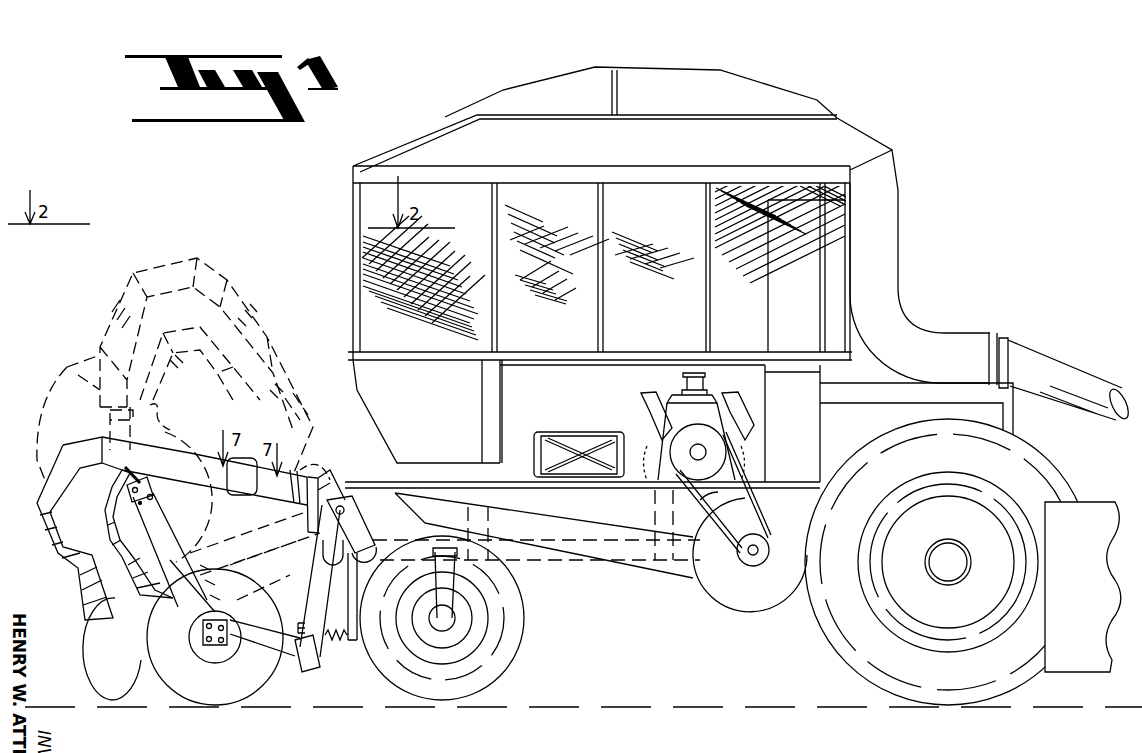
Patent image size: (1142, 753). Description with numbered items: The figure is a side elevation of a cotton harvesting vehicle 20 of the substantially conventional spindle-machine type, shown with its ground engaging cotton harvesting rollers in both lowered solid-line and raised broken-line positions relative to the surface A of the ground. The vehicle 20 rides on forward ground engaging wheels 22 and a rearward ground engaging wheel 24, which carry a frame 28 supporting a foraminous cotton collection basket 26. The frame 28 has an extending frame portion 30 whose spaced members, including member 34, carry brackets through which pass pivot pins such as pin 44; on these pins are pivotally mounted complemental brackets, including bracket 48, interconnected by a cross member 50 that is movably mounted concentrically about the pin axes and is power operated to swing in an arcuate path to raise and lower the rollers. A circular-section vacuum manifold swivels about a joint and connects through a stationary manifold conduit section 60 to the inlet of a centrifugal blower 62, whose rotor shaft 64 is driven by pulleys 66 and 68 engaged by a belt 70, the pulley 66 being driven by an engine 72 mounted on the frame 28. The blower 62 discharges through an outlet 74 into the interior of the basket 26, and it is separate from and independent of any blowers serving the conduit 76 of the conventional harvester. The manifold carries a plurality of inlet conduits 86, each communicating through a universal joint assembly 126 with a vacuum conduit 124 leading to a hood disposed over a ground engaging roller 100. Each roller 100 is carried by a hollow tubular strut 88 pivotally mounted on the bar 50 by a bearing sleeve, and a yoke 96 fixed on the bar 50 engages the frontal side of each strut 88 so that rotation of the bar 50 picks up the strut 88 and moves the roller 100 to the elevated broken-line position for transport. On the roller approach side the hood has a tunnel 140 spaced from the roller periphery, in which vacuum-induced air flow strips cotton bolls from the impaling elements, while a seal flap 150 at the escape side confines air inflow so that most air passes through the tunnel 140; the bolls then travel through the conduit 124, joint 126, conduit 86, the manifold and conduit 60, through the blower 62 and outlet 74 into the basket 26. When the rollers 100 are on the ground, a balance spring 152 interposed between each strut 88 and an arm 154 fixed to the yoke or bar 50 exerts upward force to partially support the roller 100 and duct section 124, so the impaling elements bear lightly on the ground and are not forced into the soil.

The cotton harvesting vehicle 20 is at (924, 292).
The forward ground engaging wheels 22 is at (958, 672).
The rearward ground engaging wheel 24 is at (473, 680).
The cotton collection basket 26 is at (658, 205).
The frame 28 is at (633, 493).
The extending frame portion 30 is at (403, 553).
The spaced member 34 is at (320, 588).
The pivot pin 44 is at (340, 503).
The complemental bracket 48 is at (260, 566).
The cross member 50 is at (210, 485).
The stationary manifold conduit section 60 is at (330, 477).
The centrifugal blower 62 is at (720, 578).
The rotor shaft 64 is at (760, 560).
The pulley 66 is at (710, 454).
The pulley 68 is at (760, 517).
The belt 70 is at (703, 502).
The engine 72 is at (632, 420).
The outlet 74 is at (812, 446).
The conduit 76 is at (985, 338).
The inlet conduit 86 is at (324, 458).
The cotton harvesting roller supporting strut 88 is at (228, 552).
The yoke 96 is at (270, 536).
The ground engaging roller 100 is at (52, 437).
The vacuum conduit 124 is at (180, 262).
The universal joint assembly 126 is at (298, 412).
The tunnel 140 is at (75, 382).
The seal flap 150 is at (157, 400).
The balance spring 152 is at (192, 622).
The arm 154 is at (258, 582).
The surface of the ground A is at (84, 705).